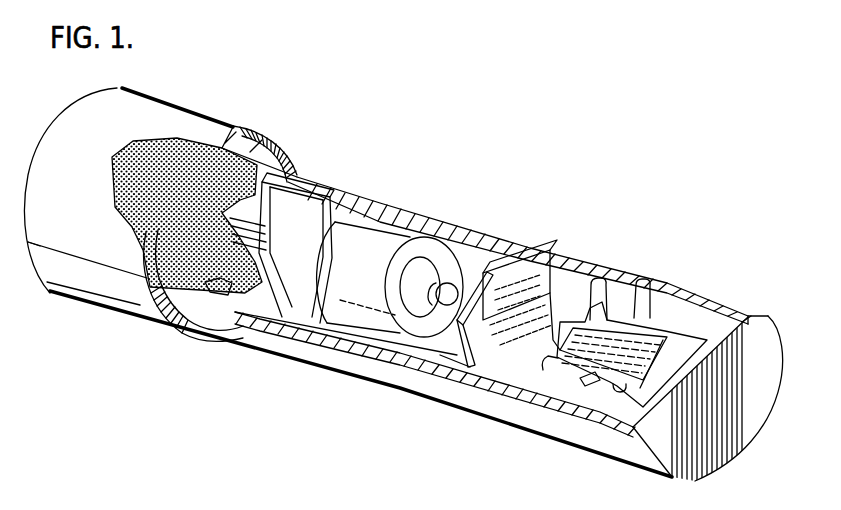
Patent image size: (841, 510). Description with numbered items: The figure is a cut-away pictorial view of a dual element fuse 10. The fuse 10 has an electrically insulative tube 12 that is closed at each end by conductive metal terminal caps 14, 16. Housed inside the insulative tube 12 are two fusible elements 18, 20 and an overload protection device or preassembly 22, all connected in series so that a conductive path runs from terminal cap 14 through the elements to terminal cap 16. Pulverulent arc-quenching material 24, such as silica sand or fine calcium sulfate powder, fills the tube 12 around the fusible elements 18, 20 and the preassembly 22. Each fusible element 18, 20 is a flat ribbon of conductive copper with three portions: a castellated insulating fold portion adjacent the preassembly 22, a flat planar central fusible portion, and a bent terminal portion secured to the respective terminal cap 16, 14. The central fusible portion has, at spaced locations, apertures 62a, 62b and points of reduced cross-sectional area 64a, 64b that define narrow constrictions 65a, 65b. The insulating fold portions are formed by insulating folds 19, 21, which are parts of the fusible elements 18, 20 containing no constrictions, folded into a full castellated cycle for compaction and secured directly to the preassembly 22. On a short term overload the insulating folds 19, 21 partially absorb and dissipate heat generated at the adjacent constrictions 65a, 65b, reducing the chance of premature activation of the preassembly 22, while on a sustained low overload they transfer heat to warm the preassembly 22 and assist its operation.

The fuse 10 is at (214, 72).
The electrically insulative tube 12 is at (367, 374).
The terminal cap 14 is at (610, 445).
The terminal cap 16 is at (50, 295).
The fusible element 18 is at (307, 207).
The insulating fold 19 is at (280, 292).
The fusible element 20 is at (525, 268).
The insulating fold 21 is at (452, 357).
The overload protection device or preassembly 22 is at (413, 240).
The pulverulent arc-quenching material 24 is at (181, 145).
The aperture 62a is at (233, 297).
The aperture 62b is at (578, 380).
The point of reduced cross-sectional area 64a is at (280, 146).
The point of reduced cross-sectional area 64b is at (600, 313).
The narrow constriction 65a is at (210, 290).
The narrow constriction 65b is at (645, 300).